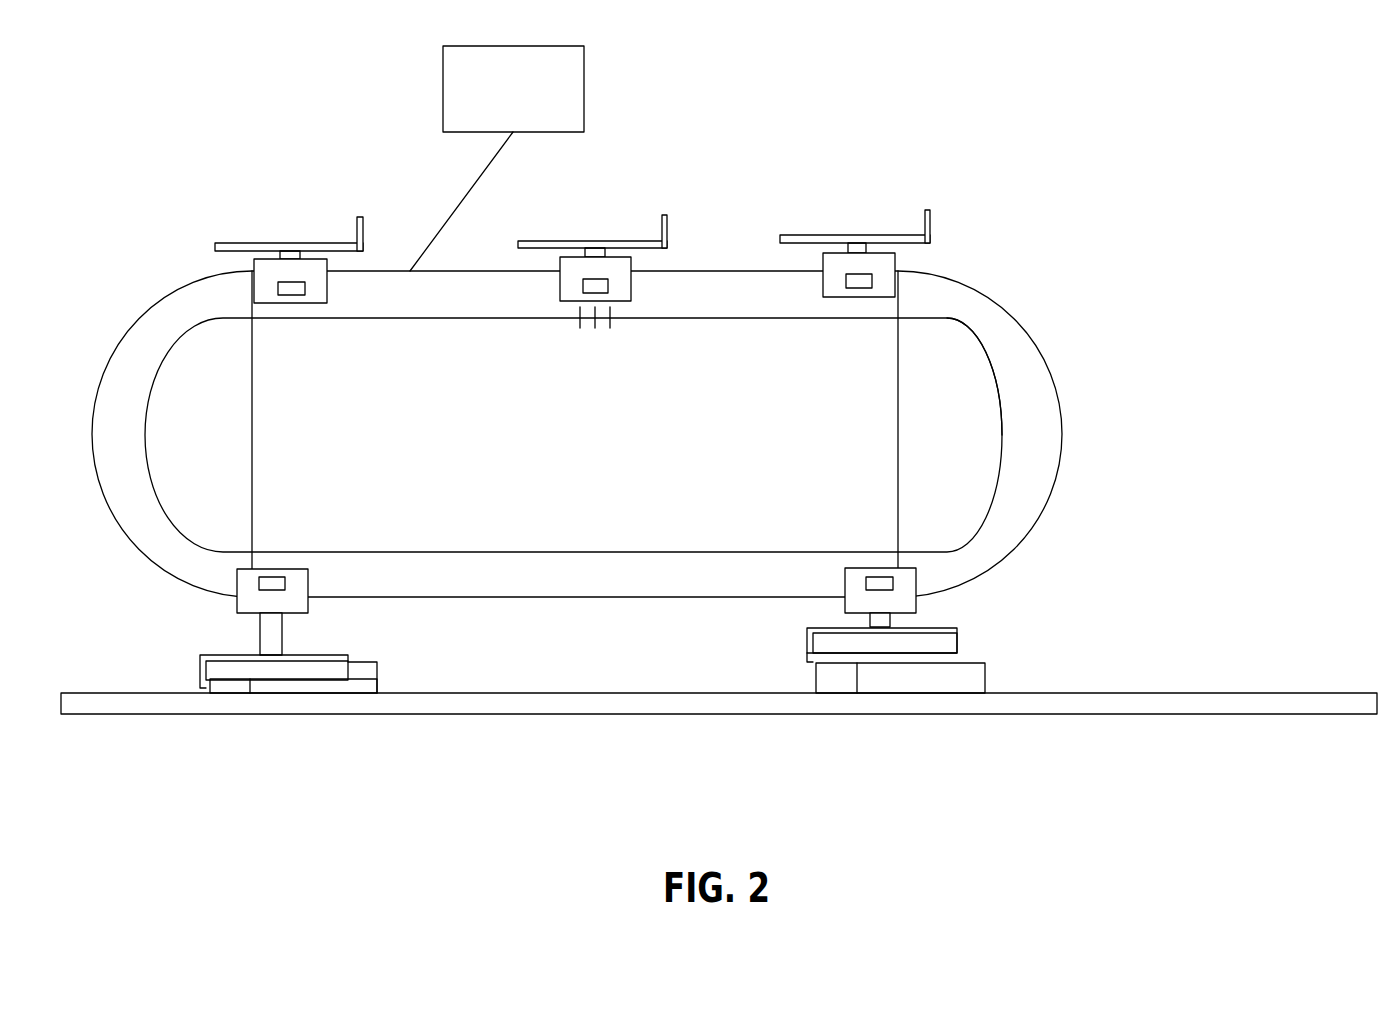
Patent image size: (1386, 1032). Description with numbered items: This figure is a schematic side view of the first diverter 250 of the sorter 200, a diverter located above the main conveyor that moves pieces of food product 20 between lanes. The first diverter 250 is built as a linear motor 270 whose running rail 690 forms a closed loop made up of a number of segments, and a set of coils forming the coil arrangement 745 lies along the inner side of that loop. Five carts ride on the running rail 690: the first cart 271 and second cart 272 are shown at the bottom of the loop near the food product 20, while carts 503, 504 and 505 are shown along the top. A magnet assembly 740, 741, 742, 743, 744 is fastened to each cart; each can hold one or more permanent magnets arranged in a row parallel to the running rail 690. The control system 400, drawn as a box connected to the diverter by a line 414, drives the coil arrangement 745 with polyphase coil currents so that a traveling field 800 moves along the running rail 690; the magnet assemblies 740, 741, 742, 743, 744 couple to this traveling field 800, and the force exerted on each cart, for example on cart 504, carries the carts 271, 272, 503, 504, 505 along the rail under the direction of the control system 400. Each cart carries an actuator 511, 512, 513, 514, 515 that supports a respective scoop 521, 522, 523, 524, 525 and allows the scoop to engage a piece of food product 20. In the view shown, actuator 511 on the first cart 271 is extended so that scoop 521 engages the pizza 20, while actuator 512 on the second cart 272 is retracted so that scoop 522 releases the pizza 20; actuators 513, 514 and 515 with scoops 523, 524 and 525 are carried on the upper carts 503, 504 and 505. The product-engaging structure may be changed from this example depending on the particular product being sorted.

The piece of food product 20 is at (986, 686).
The sorter 200 is at (1220, 714).
The first diverter 250 is at (610, 390).
The linear motor 270 is at (1003, 433).
The first cart 271 is at (235, 606).
The second cart 272 is at (921, 604).
The control system 400 is at (584, 78).
The communication line 414 is at (477, 182).
The cart 503 is at (292, 238).
The cart 504 is at (603, 238).
The cart 505 is at (851, 232).
The actuator 511 is at (284, 638).
The actuator 512 is at (862, 623).
The actuator 513 is at (252, 253).
The actuator 514 is at (575, 251).
The actuator 515 is at (822, 254).
The scoop 521 is at (350, 668).
The scoop 522 is at (810, 643).
The scoop 523 is at (365, 228).
The scoop 524 is at (668, 223).
The scoop 525 is at (931, 218).
The running rail 690 is at (1052, 489).
The magnet assembly 740 is at (882, 577).
The magnet assembly 741 is at (277, 582).
The magnet assembly 742 is at (294, 296).
The magnet assembly 743 is at (584, 295).
The magnet assembly 744 is at (860, 289).
The coil arrangement 745 is at (980, 347).
The traveling field 800 is at (611, 324).